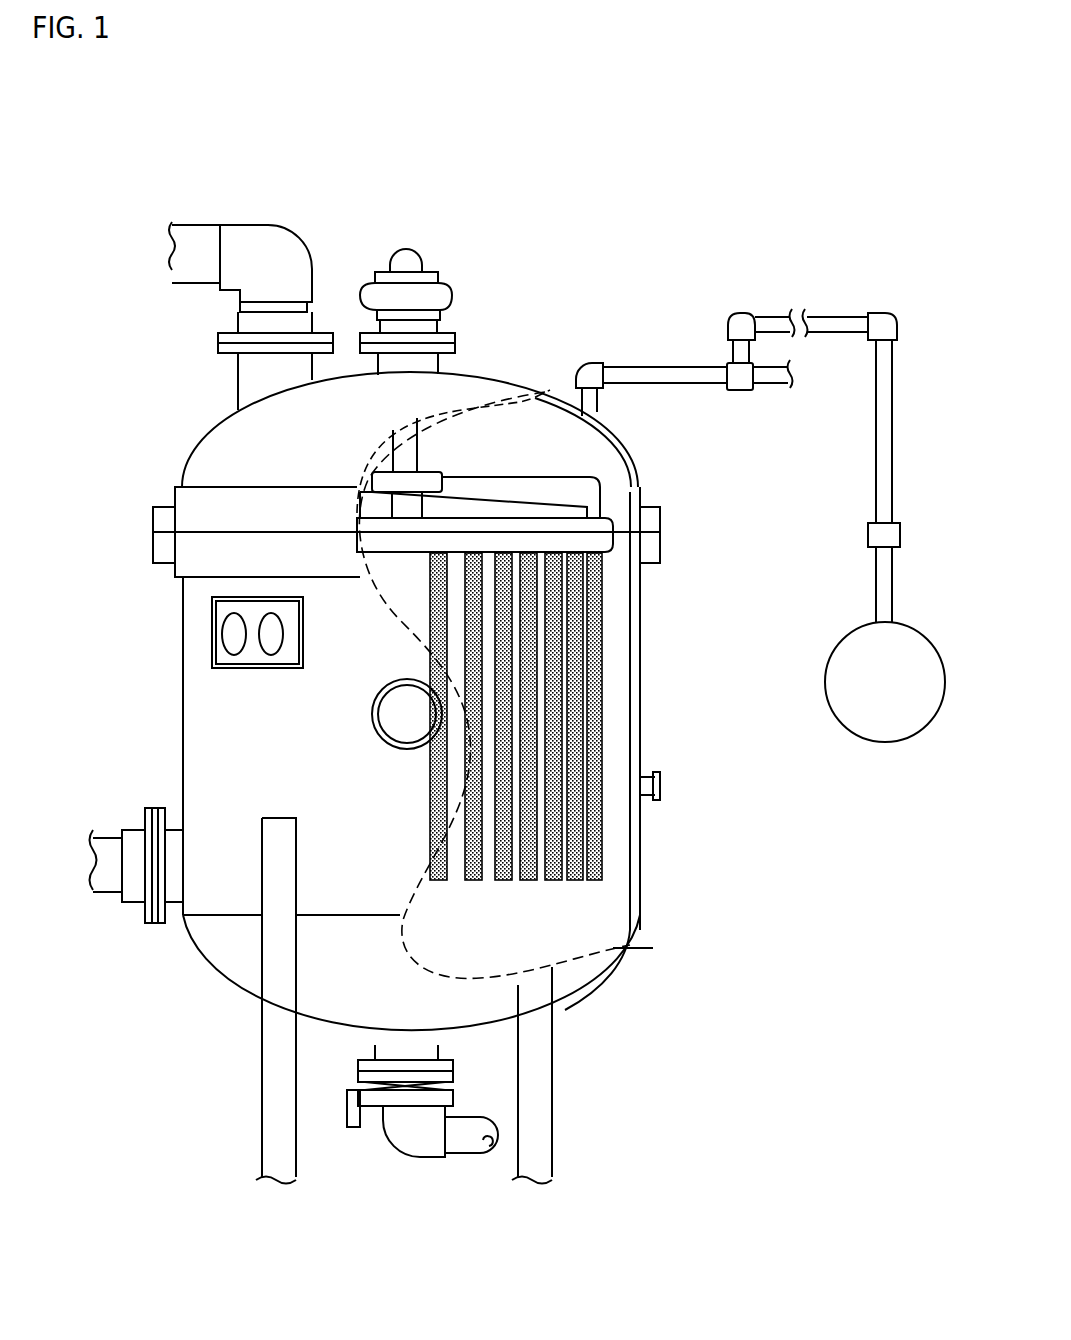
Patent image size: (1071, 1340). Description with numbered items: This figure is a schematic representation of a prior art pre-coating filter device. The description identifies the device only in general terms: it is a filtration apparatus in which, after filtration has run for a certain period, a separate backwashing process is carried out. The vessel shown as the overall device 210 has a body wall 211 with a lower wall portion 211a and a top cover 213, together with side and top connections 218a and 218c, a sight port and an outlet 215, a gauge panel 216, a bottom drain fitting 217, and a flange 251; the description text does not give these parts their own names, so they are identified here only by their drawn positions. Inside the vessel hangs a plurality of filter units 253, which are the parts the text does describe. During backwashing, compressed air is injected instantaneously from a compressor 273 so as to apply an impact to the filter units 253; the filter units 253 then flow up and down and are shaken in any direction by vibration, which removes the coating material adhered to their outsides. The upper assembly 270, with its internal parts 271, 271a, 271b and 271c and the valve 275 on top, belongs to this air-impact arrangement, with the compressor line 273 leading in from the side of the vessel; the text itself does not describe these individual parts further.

The reactor vessel 210 is at (466, 778).
The vessel body shell 211 is at (636, 824).
The lower portion of vessel body 211a is at (598, 920).
The upper cover / dome 213 is at (612, 440).
The sight glass / outlet port 215 is at (378, 707).
The gauge panel 216 is at (212, 624).
The drain valve 217 is at (345, 1127).
The side inlet nozzle 218a is at (112, 842).
The top inlet nozzle 218c is at (195, 235).
The flange 251 is at (620, 540).
The filter unit 253 is at (622, 608).
The pressure regulating assembly 270 is at (710, 180).
The internal distributor unit 271 is at (632, 258).
The distributor upper plate 271a is at (575, 488).
The distributor inner pipe 271b is at (415, 448).
The distributor sloped plate 271c is at (548, 490).
The compressor 273 is at (850, 650).
The relief valve 275 is at (405, 270).